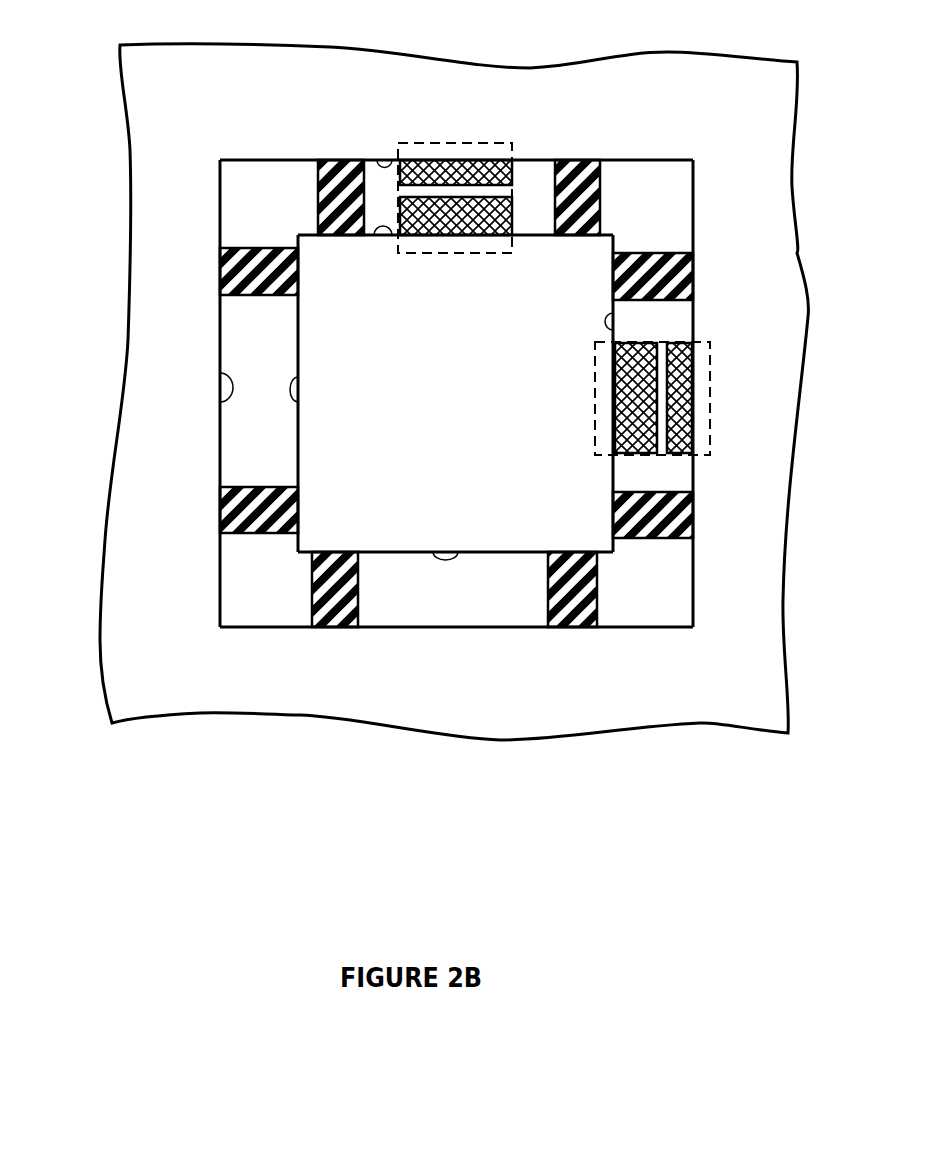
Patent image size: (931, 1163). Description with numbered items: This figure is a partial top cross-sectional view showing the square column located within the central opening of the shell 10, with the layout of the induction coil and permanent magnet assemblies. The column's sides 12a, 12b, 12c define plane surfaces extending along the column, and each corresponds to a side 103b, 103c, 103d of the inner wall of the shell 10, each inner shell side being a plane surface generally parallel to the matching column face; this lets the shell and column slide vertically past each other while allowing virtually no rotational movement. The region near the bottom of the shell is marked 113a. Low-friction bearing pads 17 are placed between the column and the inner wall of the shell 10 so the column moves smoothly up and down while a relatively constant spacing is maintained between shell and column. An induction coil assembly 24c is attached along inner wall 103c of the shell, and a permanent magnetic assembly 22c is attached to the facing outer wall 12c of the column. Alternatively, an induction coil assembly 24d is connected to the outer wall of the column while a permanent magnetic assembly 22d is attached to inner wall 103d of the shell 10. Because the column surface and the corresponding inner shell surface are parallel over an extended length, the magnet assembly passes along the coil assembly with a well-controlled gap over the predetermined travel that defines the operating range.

The shell 10 is at (100, 632).
The side of the column 12a is at (458, 552).
The side of the column 12b is at (298, 402).
The side of the column 12c is at (374, 235).
The low-friction bearing pads 17 is at (350, 158).
The permanent magnetic assembly 22c is at (490, 237).
The permanent magnetic assembly 22d is at (693, 392).
The induction coil assembly 24c is at (463, 160).
The induction coil assembly 24d is at (616, 400).
The side of the inner wall of the shell 103b is at (220, 373).
The side of the inner wall of the shell 103c is at (377, 160).
The side of the inner wall of the shell 103d is at (613, 332).
The frame side a 113a is at (227, 624).